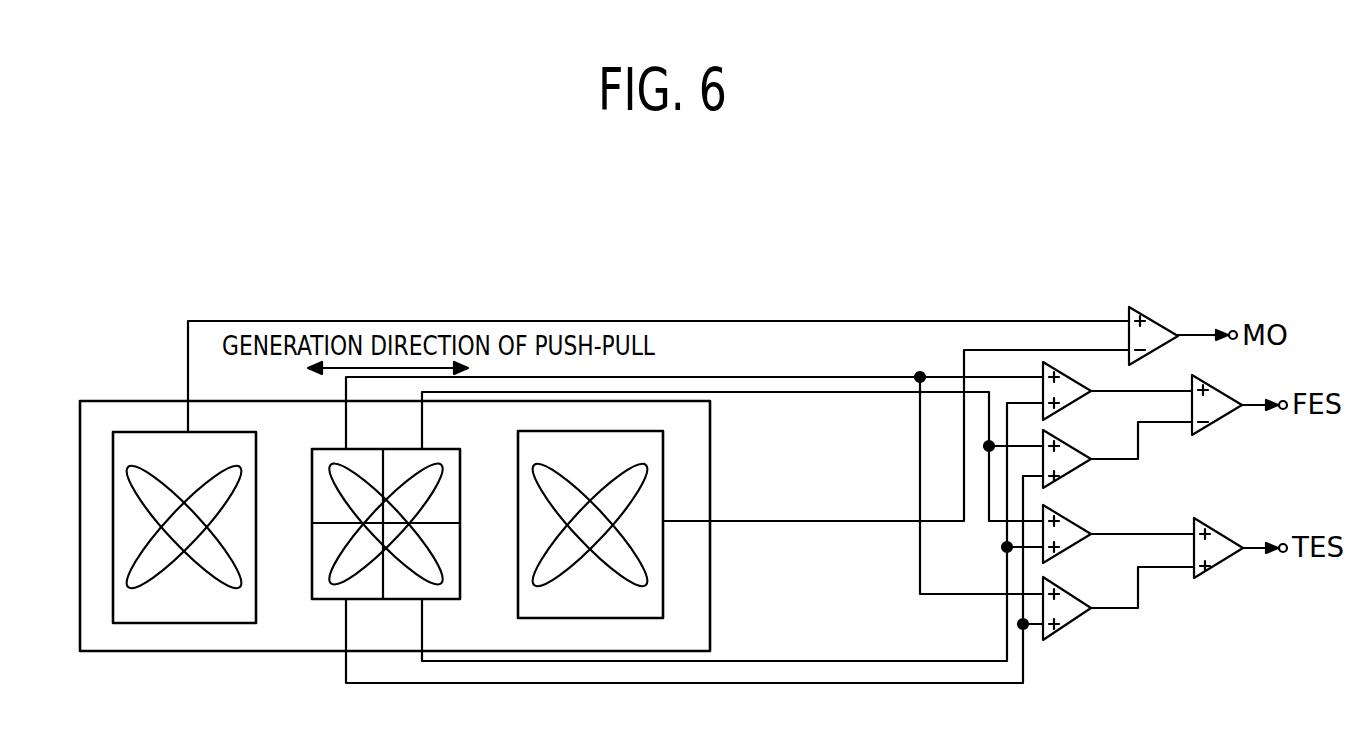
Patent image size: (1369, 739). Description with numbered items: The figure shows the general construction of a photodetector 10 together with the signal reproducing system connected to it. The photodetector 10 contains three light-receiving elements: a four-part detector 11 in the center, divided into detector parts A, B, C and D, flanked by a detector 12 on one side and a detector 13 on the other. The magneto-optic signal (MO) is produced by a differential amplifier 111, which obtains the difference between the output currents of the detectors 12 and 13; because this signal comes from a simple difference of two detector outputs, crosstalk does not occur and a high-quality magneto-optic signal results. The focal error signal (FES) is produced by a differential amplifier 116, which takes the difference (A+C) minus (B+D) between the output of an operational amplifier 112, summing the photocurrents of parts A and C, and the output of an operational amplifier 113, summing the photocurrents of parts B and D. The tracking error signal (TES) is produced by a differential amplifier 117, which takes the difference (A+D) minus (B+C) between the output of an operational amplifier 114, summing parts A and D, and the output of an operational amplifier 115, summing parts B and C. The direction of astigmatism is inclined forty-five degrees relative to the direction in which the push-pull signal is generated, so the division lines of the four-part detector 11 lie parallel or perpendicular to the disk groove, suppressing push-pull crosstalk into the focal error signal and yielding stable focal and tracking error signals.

The photodetector 10 is at (710, 580).
The 4-part detector 11 is at (329, 600).
The detector 12 is at (141, 432).
The detector 13 is at (663, 450).
The differential amplifier 111 is at (1163, 324).
The operational amplifier 112 is at (1067, 362).
The operational amplifier 113 is at (1072, 449).
The operational amplifier 114 is at (1080, 615).
The operational amplifier 115 is at (1066, 518).
The differential amplifier 116 is at (1219, 420).
The differential amplifier 117 is at (1216, 567).